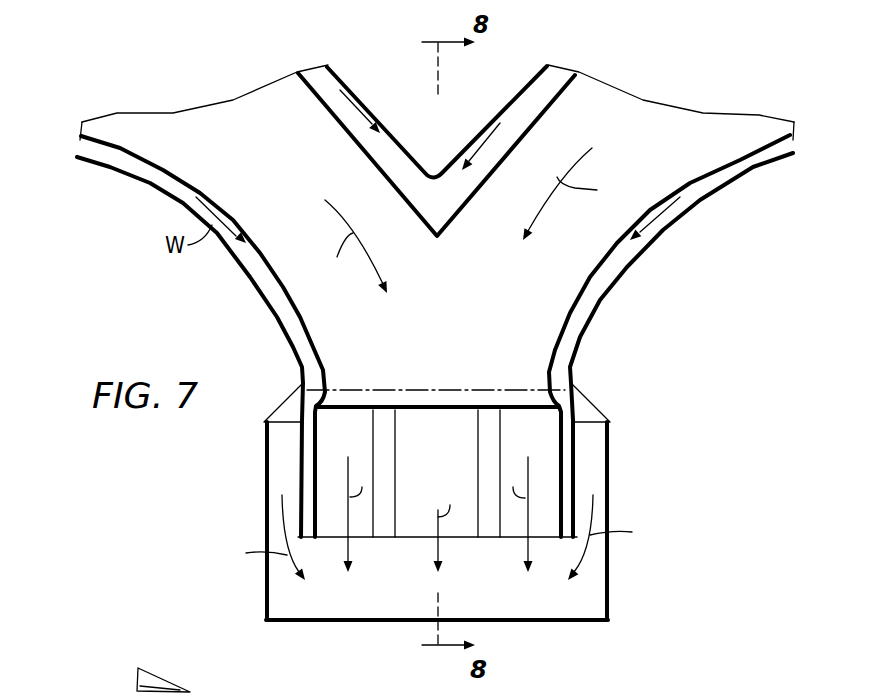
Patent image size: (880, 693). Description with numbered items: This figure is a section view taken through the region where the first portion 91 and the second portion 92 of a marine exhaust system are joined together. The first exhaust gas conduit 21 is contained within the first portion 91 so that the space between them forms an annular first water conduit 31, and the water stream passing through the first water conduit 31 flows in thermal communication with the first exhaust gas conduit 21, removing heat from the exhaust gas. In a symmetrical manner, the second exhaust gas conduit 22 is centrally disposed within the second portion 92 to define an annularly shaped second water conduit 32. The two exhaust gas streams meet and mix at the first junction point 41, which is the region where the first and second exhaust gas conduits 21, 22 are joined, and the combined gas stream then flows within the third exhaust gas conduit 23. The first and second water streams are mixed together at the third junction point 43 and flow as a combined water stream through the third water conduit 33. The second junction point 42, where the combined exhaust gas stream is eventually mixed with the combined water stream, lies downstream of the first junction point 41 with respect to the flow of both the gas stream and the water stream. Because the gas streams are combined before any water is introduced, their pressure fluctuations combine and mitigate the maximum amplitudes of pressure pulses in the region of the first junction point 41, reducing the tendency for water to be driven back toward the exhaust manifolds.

The first exhaust gas conduit 21 is at (207, 123).
The second exhaust gas conduit 22 is at (657, 115).
The third exhaust gas conduit 23 is at (447, 468).
The first water conduit 31 is at (78, 143).
The second water conduit 32 is at (796, 142).
The third water conduit 33 is at (280, 455).
The first junction point 41 is at (440, 278).
The second junction point 42 is at (598, 567).
The third junction point 43 is at (395, 148).
The first portion 91 is at (78, 163).
The second portion 92 is at (751, 168).